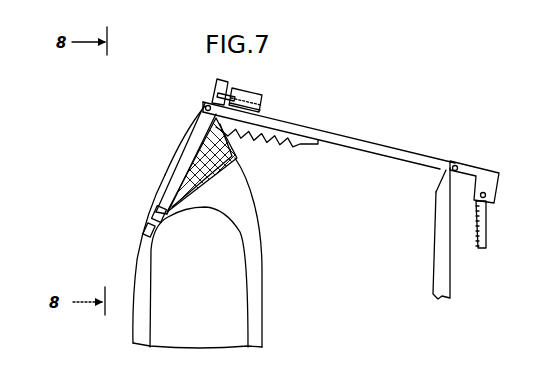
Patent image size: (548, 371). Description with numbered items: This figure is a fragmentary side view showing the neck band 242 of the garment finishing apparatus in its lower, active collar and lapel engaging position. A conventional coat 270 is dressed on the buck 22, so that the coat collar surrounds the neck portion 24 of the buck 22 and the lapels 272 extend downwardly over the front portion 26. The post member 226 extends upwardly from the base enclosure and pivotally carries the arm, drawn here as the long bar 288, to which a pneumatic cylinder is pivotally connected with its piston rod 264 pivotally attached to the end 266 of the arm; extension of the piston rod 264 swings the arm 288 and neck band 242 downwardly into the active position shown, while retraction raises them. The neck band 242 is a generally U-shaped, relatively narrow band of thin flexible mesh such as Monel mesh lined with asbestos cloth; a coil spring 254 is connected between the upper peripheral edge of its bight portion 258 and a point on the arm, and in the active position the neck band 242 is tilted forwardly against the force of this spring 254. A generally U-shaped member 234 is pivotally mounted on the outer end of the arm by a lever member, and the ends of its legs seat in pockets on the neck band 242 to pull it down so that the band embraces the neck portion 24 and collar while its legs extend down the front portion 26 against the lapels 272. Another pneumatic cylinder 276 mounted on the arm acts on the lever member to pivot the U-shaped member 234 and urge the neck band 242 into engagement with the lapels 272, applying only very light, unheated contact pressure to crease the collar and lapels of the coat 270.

The buck 22 is at (150, 170).
The neck portion 24 is at (190, 140).
The front portion 26 is at (158, 190).
The post member 226 is at (452, 282).
The U-shaped member 234 is at (179, 144).
The neck band 242 is at (212, 181).
The coil spring 254 is at (277, 140).
The bight portion 258 is at (237, 150).
The piston rod 264 is at (488, 213).
The end of arm 266 is at (488, 172).
The coat 270 is at (215, 280).
The lapels 272 is at (146, 237).
The pneumatic cylinder 276 is at (253, 97).
The bar 288 is at (378, 137).